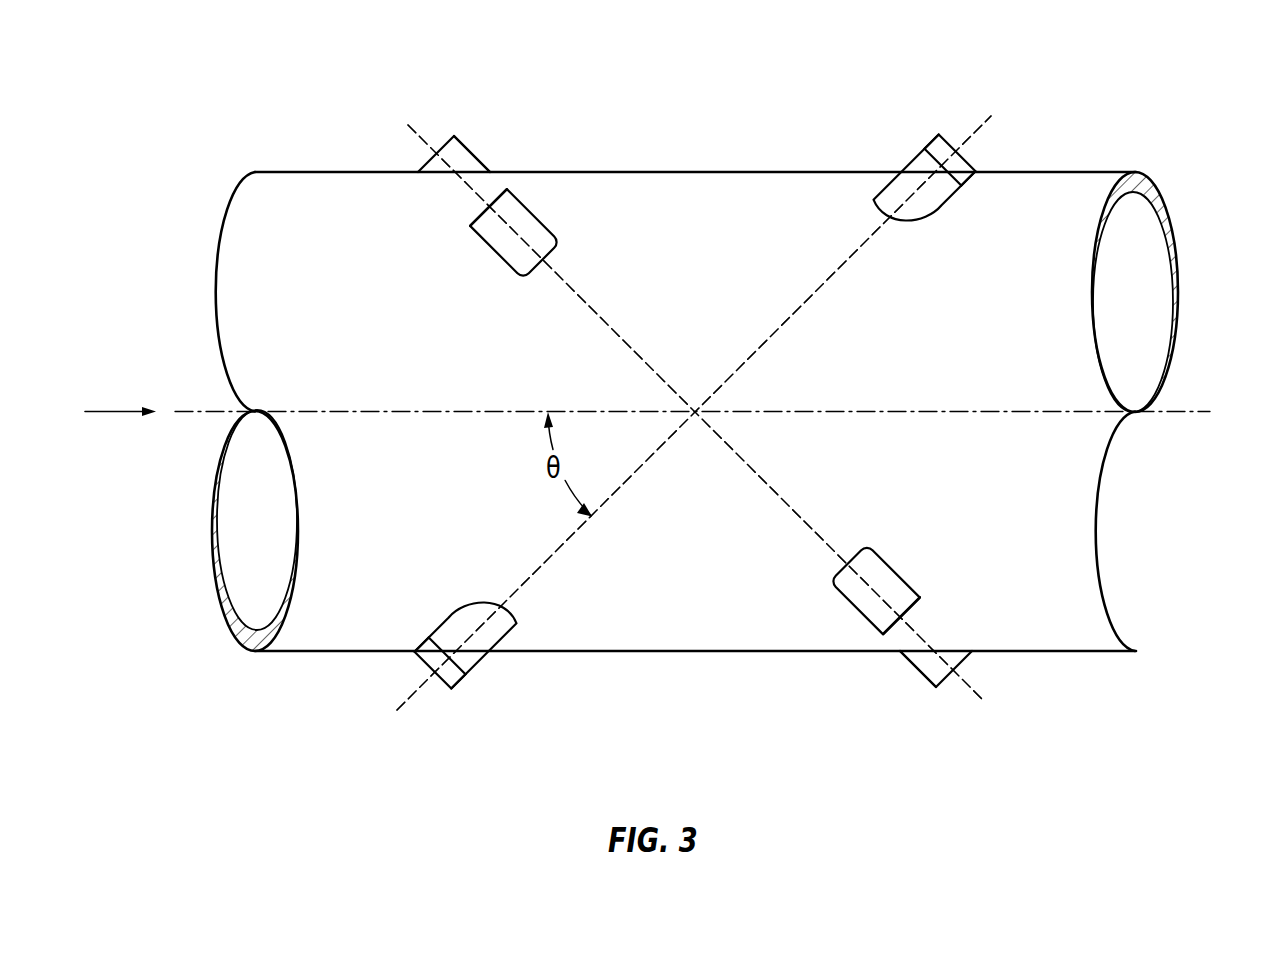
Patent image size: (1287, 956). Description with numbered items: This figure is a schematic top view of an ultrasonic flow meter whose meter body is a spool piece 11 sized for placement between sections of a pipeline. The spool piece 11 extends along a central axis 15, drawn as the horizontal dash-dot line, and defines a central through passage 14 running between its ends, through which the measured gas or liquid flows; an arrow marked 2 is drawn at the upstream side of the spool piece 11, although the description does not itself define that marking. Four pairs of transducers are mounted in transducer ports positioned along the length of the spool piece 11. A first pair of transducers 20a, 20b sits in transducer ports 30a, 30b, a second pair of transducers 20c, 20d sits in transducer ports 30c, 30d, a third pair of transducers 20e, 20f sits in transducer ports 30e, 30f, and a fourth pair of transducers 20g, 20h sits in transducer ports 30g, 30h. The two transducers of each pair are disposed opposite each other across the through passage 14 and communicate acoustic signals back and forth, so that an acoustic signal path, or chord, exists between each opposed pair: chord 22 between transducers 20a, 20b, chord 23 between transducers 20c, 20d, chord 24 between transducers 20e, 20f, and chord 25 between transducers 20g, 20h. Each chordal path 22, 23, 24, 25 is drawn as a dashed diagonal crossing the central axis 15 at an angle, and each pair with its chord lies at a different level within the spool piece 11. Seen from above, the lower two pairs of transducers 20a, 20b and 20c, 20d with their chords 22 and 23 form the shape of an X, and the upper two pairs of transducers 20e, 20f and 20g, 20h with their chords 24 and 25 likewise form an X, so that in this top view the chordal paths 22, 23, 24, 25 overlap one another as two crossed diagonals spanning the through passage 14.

The fluid flow direction 2 is at (122, 410).
The spool piece 11 is at (1088, 172).
The central through passage 14 is at (1134, 340).
The central axis 15 is at (993, 410).
The acoustic signal path 22 is at (814, 293).
The acoustic signal path 24 is at (694, 413).
The acoustic signal path 23 is at (793, 498).
The acoustic signal path 25 is at (695, 412).
The transducer 20a is at (947, 140).
The transducer 20b is at (440, 681).
The transducer 20c is at (967, 656).
The transducer 20d is at (440, 148).
The transducer 20e is at (968, 178).
The transducer 20f is at (420, 654).
The transducer 20g is at (918, 600).
The transducer 20h is at (480, 215).
The transducer port 30a is at (929, 144).
The transducer port 30b is at (449, 686).
The transducer port 30c is at (920, 671).
The transducer port 30d is at (471, 153).
The transducer port 30e is at (932, 214).
The transducer port 30f is at (503, 637).
The transducer port 30g is at (896, 571).
The transducer port 30h is at (495, 253).